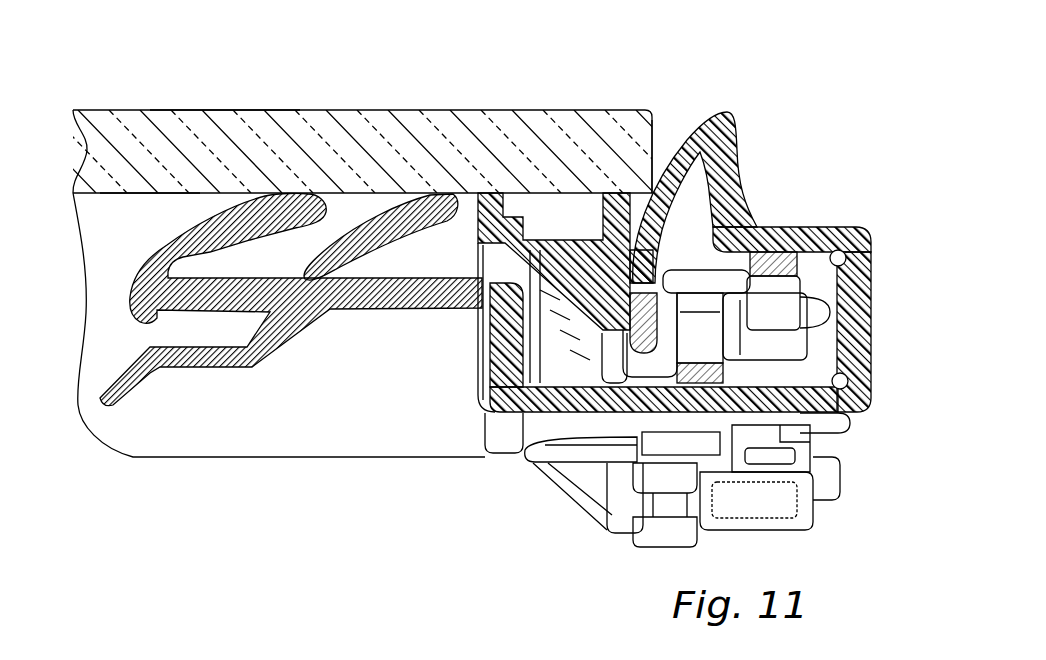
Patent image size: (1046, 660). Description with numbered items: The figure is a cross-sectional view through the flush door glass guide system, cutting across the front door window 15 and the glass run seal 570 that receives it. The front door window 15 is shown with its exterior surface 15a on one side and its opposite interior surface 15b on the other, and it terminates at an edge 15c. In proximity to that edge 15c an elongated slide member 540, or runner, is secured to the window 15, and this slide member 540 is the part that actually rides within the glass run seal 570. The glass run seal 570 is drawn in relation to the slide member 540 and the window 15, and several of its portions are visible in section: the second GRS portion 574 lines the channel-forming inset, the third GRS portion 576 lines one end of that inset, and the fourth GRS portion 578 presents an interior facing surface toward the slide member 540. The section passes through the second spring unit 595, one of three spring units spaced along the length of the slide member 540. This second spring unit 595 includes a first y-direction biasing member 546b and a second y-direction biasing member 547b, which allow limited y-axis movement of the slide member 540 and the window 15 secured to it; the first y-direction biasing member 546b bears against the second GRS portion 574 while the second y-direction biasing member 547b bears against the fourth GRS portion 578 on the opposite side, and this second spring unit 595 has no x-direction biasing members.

The front door window 15 is at (127, 143).
The exterior surface 15a is at (188, 110).
The interior surface 15b is at (130, 193).
The edge 15c is at (652, 143).
The slide member 540 is at (517, 215).
The glass run seal 570 is at (777, 242).
The third GRS portion 576 is at (870, 290).
The fourth GRS portion 578 is at (767, 230).
The second y-direction biasing member 547b is at (793, 253).
The second spring unit 595 is at (773, 320).
The first y-direction biasing member 546b is at (812, 431).
The second GRS portion 574 is at (567, 400).